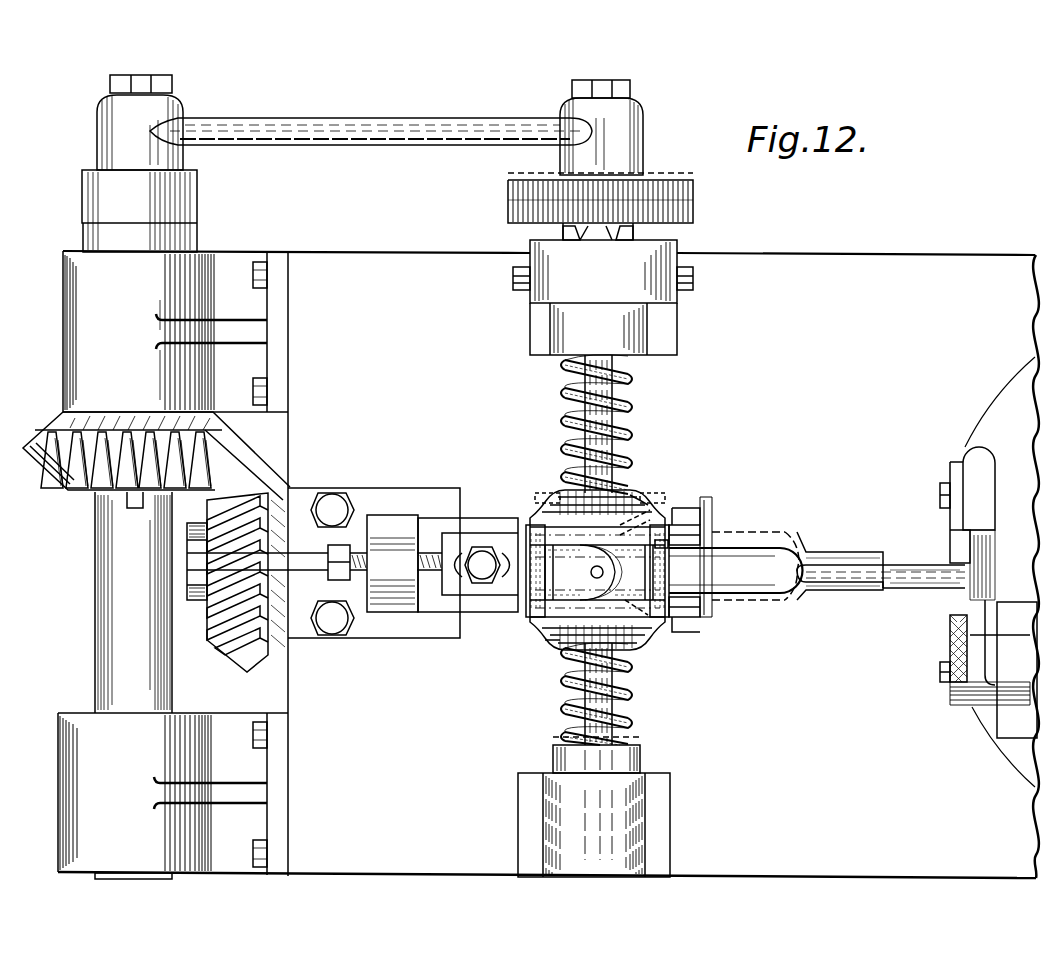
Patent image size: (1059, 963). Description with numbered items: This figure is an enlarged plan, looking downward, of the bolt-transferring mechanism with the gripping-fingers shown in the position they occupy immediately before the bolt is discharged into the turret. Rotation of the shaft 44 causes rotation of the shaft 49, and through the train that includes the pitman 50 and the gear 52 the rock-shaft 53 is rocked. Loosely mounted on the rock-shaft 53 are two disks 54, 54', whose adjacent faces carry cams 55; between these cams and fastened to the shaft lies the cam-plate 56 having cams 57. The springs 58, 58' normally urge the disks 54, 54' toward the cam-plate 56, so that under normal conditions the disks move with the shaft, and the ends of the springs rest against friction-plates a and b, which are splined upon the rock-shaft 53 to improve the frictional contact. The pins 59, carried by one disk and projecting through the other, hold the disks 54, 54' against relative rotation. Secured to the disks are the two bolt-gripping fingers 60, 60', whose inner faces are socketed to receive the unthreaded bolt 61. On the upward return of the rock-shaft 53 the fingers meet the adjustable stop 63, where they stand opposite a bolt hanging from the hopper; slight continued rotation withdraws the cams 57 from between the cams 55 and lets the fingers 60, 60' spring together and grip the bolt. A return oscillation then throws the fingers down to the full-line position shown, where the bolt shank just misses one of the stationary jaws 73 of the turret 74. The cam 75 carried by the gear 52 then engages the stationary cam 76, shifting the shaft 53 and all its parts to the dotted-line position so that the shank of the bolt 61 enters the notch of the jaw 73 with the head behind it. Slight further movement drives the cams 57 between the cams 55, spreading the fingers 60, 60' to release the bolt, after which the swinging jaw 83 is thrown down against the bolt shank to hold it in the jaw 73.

The shaft 44 is at (197, 602).
The shaft 49 is at (117, 603).
The pitman 50 is at (376, 142).
The gear 52 is at (542, 203).
The rock-shaft 53 is at (618, 414).
The disk 54 is at (613, 488).
The disk 54' is at (663, 646).
The cams 55 is at (525, 533).
The cam-plate 56 is at (662, 543).
The cams 57 is at (567, 528).
The spring 58 is at (575, 424).
The spring 58' is at (623, 694).
The pins 59 is at (715, 578).
The bolt-gripping finger 60 is at (839, 537).
The bolt-gripping finger 60' is at (836, 615).
The unthreaded bolt 61 is at (924, 590).
The adjustable stop 63 is at (462, 588).
The stationary jaw 73 is at (958, 544).
The turret 74 is at (1007, 424).
The cam 75 is at (570, 231).
The stationary cam 76 is at (630, 234).
The swinging jaw 83 is at (950, 656).
The friction-plate a is at (545, 647).
The friction-plate b is at (630, 495).